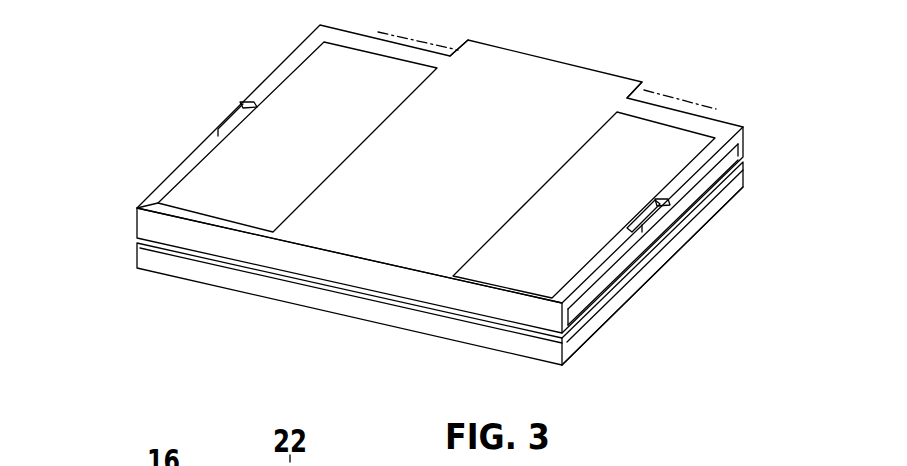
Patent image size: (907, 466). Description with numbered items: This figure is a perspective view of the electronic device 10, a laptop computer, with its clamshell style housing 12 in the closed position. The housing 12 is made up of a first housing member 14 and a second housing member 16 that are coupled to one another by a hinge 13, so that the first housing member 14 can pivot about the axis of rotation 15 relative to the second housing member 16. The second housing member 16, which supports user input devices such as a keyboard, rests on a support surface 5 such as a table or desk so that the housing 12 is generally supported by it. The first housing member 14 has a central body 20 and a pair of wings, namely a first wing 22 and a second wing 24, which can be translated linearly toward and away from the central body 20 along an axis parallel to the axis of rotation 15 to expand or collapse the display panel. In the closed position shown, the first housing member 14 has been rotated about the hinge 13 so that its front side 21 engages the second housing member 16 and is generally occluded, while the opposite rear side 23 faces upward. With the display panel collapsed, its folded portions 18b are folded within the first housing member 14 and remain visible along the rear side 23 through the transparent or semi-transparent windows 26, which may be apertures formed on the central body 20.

The support surface 5 is at (738, 355).
The electronic device 10 is at (784, 51).
The housing 12 is at (694, 252).
The hinge 13 is at (574, 48).
The first housing member 14 is at (762, 131).
The axis of rotation 15 is at (670, 100).
The second housing member 16 is at (762, 167).
The folded portions 18b is at (203, 173).
The central body 20 is at (146, 204).
The front side 21 is at (431, 324).
The first wing 22 is at (238, 108).
The rear side 23 is at (514, 96).
The second wing 24 is at (707, 178).
The windows 26 is at (295, 52).